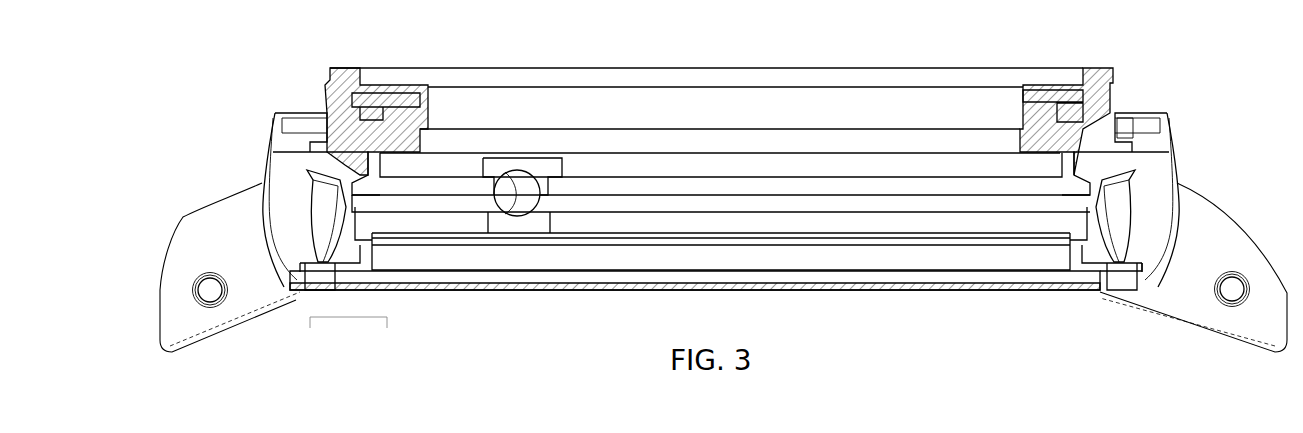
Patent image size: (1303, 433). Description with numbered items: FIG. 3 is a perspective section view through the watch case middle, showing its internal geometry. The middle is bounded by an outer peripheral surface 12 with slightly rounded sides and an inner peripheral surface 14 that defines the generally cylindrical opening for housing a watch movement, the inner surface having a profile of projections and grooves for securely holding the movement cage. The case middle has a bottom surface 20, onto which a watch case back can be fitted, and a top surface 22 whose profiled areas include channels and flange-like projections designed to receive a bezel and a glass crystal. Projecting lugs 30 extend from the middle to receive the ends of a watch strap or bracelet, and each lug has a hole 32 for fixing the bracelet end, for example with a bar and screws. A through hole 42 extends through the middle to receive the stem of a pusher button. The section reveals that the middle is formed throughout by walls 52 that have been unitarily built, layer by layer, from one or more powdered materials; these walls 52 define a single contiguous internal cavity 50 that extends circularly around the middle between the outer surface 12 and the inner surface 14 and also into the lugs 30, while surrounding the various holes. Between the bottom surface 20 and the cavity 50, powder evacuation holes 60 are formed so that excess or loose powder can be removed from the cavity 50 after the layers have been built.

The outer peripheral surface 12 is at (268, 133).
The inner peripheral surface 14 is at (460, 200).
The bottom surface 20 is at (1100, 290).
The top surface 22 is at (1143, 130).
The projecting lug 30 is at (180, 250).
The hole 32 is at (210, 292).
The through hole 42 is at (510, 195).
The internal cavity 50 is at (300, 195).
The walls 52 is at (273, 253).
The powder evacuation hole 60 is at (314, 277).